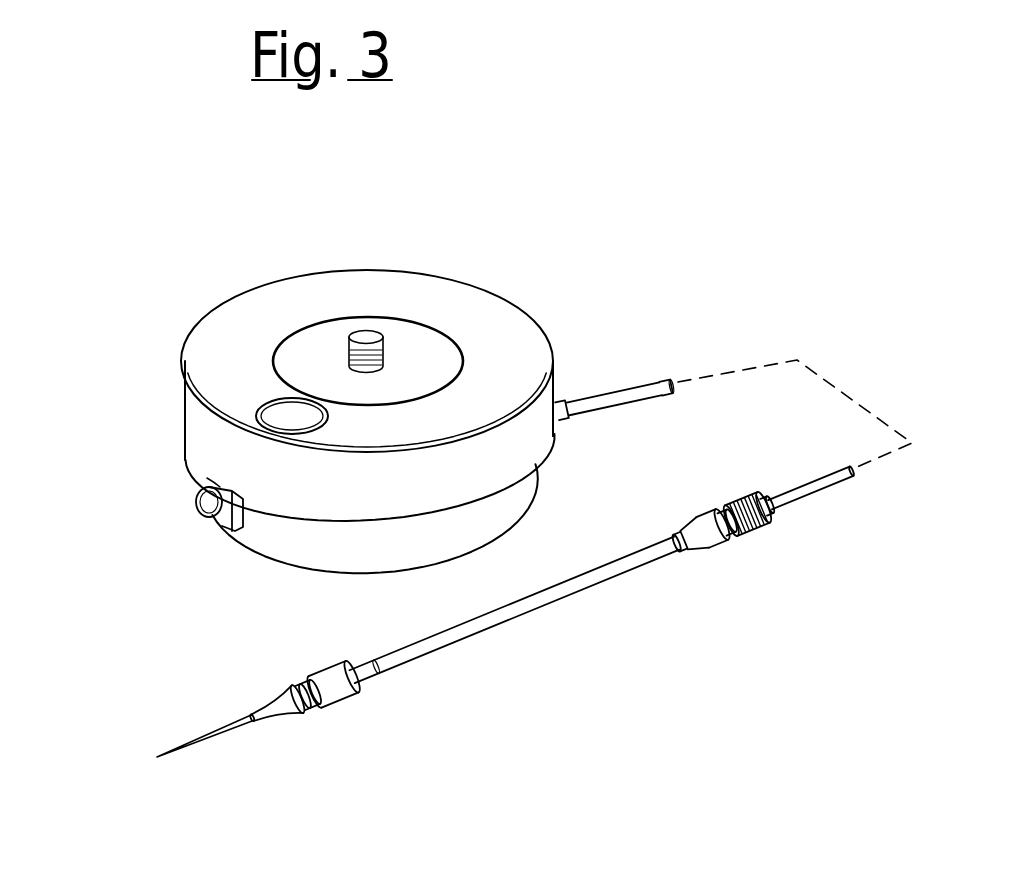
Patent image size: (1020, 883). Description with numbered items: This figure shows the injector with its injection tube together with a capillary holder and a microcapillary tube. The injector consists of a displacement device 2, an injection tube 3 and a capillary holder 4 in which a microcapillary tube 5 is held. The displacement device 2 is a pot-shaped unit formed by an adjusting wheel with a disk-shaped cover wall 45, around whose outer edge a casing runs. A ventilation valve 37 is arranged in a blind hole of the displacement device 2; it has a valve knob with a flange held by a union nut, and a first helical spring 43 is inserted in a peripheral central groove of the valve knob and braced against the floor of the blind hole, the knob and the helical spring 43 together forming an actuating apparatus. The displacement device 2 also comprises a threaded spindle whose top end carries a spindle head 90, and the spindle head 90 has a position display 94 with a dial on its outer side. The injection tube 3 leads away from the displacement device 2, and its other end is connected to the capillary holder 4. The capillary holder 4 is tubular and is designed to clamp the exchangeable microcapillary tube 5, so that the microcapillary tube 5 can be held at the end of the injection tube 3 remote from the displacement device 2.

The displacement device 2 is at (134, 437).
The injection tube 3 is at (677, 370).
The capillary holder 4 is at (543, 601).
The microcapillary tube 5 is at (205, 737).
The ventilation valve 37 is at (212, 524).
The first helical spring 43 is at (517, 452).
The disk-shaped cover wall 45 is at (520, 383).
The spindle head 90 is at (350, 339).
The position display 94 is at (385, 367).